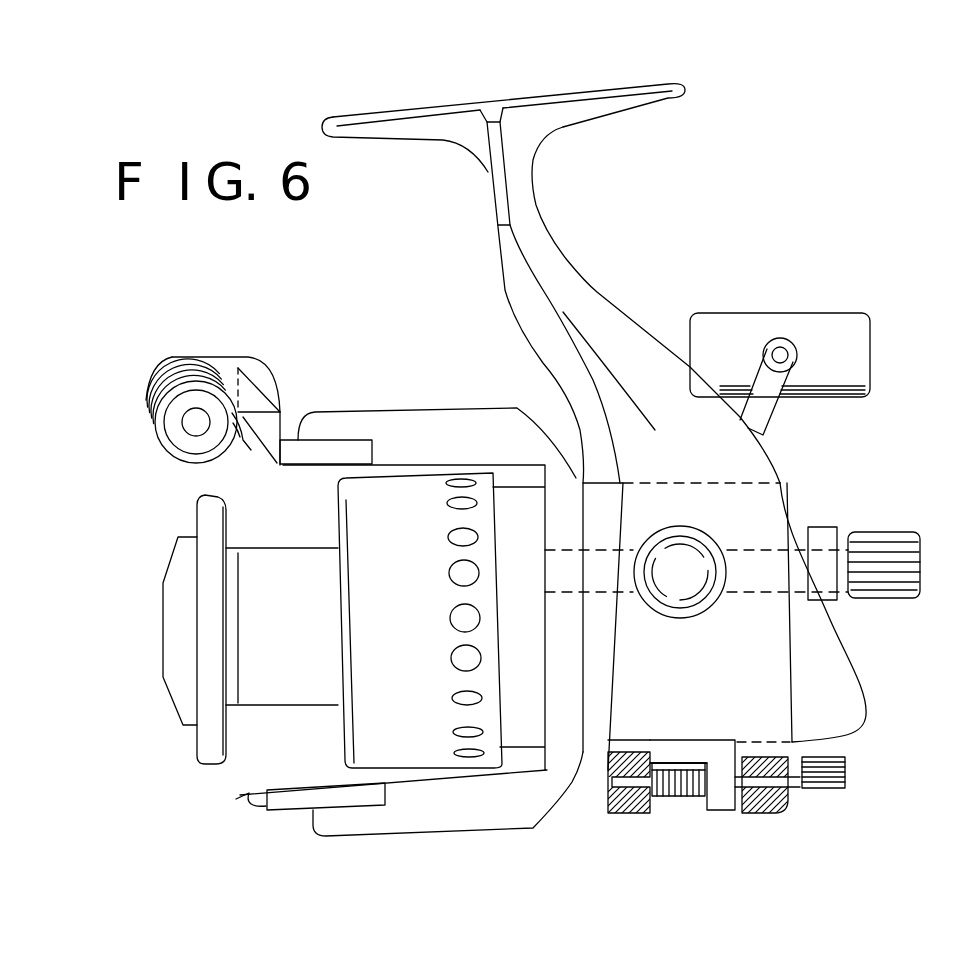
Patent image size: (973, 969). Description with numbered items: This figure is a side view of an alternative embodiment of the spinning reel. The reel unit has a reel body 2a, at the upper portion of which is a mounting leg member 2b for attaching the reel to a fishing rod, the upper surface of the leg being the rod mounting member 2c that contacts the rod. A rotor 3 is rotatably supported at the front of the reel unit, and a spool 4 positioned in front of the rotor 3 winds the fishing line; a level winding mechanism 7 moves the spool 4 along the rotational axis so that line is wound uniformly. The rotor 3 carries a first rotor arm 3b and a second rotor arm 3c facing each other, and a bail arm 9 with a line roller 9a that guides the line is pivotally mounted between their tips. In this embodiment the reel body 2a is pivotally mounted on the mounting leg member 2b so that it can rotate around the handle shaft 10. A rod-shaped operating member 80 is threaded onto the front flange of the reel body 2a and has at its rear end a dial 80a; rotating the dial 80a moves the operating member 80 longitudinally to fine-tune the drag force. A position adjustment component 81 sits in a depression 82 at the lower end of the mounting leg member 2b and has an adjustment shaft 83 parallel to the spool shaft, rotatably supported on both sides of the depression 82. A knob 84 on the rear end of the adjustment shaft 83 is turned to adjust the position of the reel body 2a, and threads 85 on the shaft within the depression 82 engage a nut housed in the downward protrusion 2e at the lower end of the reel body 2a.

The reel body 2a is at (840, 675).
The mounting leg member 2b is at (567, 283).
The rod mounting member 2c is at (413, 112).
The protrusion 2e is at (727, 803).
The rotor 3 is at (592, 765).
The first rotor arm 3b is at (383, 443).
The second rotor arm 3c is at (428, 810).
The spool 4 is at (283, 548).
The level winding mechanism 7 is at (748, 330).
The bail arm 9 is at (220, 468).
The line roller 9a is at (175, 377).
The handle shaft 10 is at (690, 567).
The operating member 80 is at (857, 531).
The dial 80a is at (893, 563).
The position adjustment component 81 is at (675, 800).
The depression 82 is at (653, 807).
The adjustment shaft 83 is at (755, 802).
The knob 84 is at (823, 787).
The threads 85 is at (694, 803).